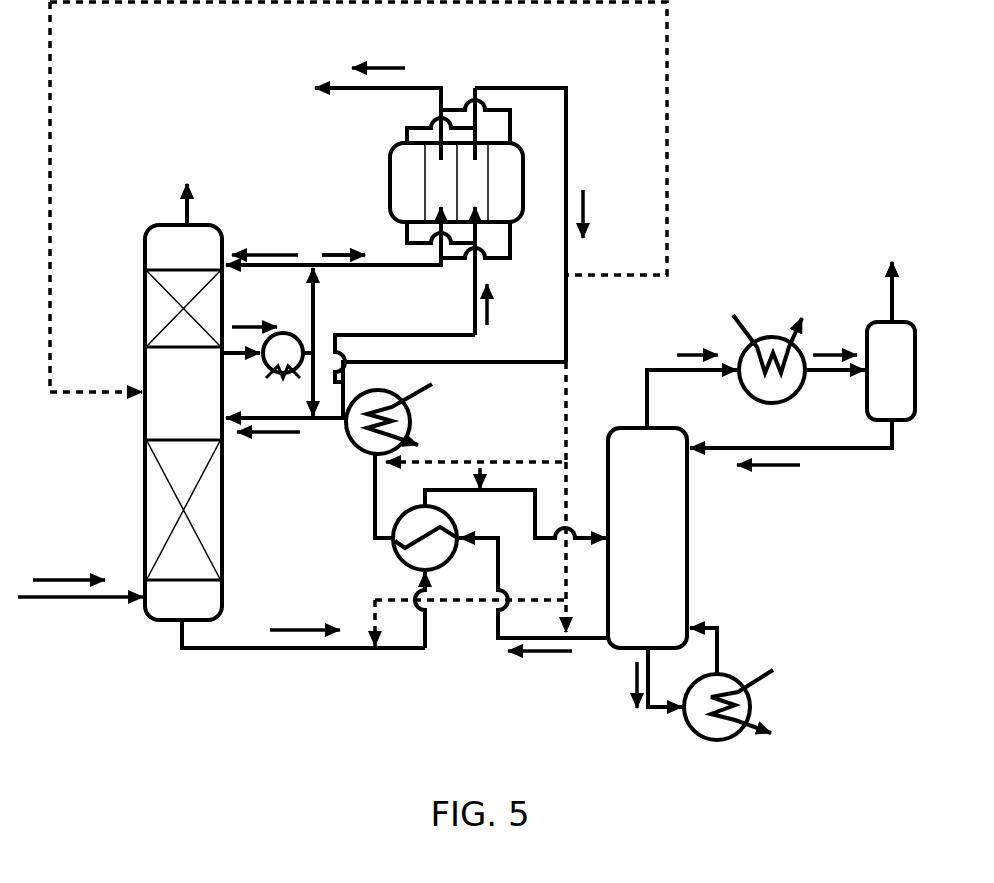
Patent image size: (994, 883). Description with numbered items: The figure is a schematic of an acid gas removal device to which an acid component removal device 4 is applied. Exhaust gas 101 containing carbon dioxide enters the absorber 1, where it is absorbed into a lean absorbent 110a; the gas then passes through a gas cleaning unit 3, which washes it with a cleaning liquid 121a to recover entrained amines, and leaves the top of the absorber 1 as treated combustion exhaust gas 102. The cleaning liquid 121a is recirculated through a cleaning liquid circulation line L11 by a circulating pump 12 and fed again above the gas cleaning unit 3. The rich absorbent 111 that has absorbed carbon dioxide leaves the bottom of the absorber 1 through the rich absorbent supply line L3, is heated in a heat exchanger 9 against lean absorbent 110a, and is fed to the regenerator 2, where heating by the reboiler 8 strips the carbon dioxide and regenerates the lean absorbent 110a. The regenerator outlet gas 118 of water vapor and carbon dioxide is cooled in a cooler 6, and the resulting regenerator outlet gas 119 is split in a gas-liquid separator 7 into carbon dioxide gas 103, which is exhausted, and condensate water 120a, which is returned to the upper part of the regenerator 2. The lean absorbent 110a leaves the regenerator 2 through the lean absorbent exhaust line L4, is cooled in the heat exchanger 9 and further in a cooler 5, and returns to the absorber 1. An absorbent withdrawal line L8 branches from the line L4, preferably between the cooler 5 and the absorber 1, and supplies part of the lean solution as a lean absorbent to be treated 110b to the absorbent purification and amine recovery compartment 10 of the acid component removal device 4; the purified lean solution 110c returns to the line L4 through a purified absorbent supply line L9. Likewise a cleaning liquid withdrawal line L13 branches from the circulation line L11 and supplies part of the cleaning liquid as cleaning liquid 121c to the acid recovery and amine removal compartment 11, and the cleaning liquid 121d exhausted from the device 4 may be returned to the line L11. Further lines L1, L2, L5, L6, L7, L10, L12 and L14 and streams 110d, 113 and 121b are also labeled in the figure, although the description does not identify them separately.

The absorber 1 is at (148, 225).
The regenerator 2 is at (689, 546).
The gas cleaning unit 3 is at (155, 302).
The acid component removal device 4 is at (517, 143).
The cooler 5 is at (410, 415).
The cooler 6 is at (771, 337).
The gas-liquid separator 7 is at (905, 422).
The reboiler 8 is at (752, 700).
The heat exchanger 9 is at (393, 545).
The absorbent purification compartment and amine recovery compartment 10 is at (478, 150).
The acid recovery compartment and amine removal compartment 11 is at (445, 150).
The circulating pump 12 is at (262, 368).
The exhaust gas 101 is at (69, 564).
The treated combustion exhaust gas 102 is at (187, 176).
The carbon dioxide gas 103 is at (886, 261).
The lean absorbent 110a is at (540, 666).
The lean absorbent to be treated 110b is at (517, 304).
The purified lean solution 110c is at (615, 214).
The lean liquid stream 110d is at (286, 440).
The rich absorbent 111 is at (305, 615).
The bottom liquid stream 113 is at (608, 685).
The regenerator outlet gas 118 is at (697, 339).
The regenerator outlet gas 119 is at (835, 346).
The condensate water 120a is at (768, 484).
The cleaning liquid 121a is at (257, 312).
The semi-lean liquid stream 121b is at (265, 239).
The cleaning liquid 121c is at (342, 239).
The cleaning liquid 121d is at (376, 55).
The feed line L1 is at (80, 618).
The treated gas line L2 is at (168, 204).
The rich absorbent supply line L3 is at (303, 653).
The lean absorbent exhaust line L4 is at (533, 588).
The overhead vapor line L5 is at (680, 384).
The gas outlet line L6 is at (910, 292).
The reflux line L7 is at (791, 433).
The absorbent withdrawal line L8 is at (405, 302).
The purified absorbent supply line L9 is at (539, 225).
The lean liquid return line L10 is at (300, 420).
The cleaning liquid circulation line L11 is at (335, 342).
The semi-lean liquid line L12 is at (333, 230).
The cleaning liquid withdrawal line L13 is at (342, 225).
The semi-lean liquid return line L14 is at (378, 124).